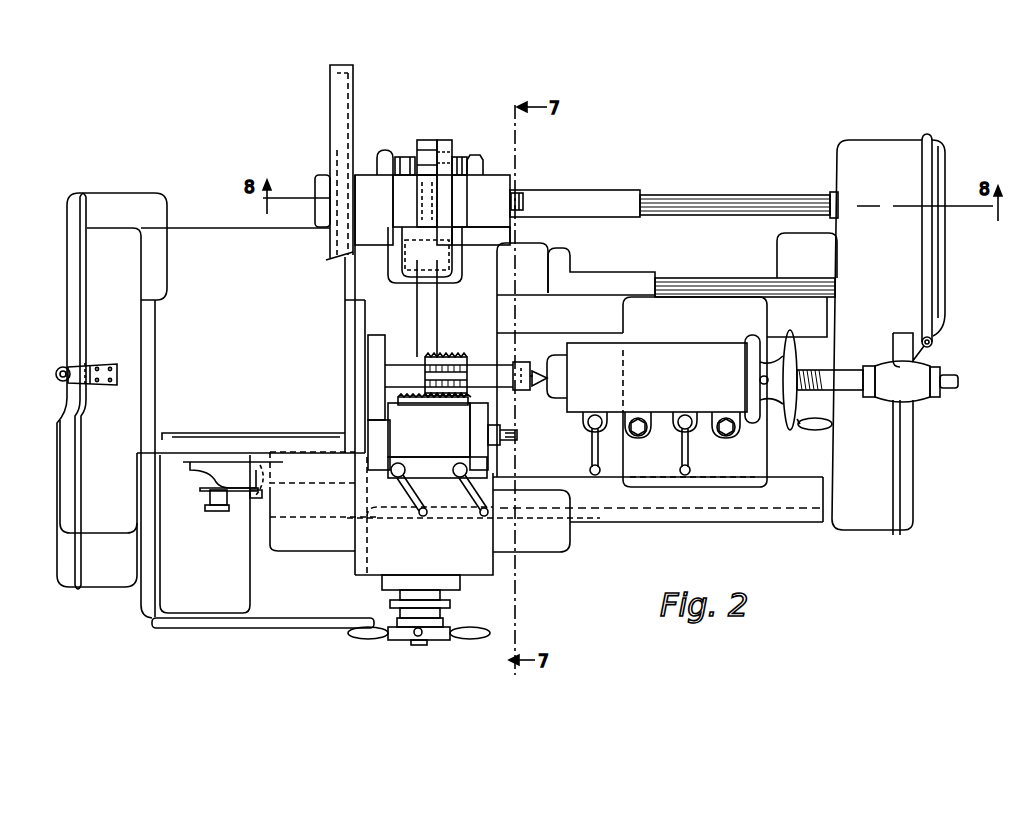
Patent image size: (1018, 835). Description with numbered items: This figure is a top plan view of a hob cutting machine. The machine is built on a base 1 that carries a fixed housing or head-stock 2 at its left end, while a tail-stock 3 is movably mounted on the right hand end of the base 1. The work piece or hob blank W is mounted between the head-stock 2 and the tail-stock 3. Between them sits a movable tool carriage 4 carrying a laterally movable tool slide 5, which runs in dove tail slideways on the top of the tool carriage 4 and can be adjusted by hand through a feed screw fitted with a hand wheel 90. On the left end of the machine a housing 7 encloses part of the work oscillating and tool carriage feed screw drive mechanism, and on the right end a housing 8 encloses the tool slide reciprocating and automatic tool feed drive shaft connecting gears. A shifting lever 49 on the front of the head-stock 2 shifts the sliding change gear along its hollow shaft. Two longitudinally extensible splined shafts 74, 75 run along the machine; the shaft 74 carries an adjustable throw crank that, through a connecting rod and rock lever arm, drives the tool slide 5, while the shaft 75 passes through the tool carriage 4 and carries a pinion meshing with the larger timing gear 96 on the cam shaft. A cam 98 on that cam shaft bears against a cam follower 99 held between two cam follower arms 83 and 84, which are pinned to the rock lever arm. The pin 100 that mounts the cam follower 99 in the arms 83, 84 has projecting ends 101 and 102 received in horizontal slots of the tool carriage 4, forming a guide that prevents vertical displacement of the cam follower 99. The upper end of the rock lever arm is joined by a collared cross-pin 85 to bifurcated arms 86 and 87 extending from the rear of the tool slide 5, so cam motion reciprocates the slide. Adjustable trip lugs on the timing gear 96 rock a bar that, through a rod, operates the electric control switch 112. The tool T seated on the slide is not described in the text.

The base 1 is at (628, 520).
The head-stock 2 is at (173, 378).
The tail-stock 3 is at (665, 405).
The tool carriage 4 is at (541, 540).
The tool slide 5 is at (465, 428).
The housing 7 is at (90, 442).
The housing 8 is at (888, 334).
The shifting lever 49 is at (236, 495).
The shaft 74 is at (718, 280).
The shaft 75 is at (740, 194).
The cam follower arm 83 is at (452, 198).
The cam follower arm 84 is at (398, 213).
The collared cross-pin 85 is at (430, 257).
The bifurcated arm 86 is at (443, 236).
The bifurcated arm 87 is at (413, 262).
The hand wheel 90 is at (442, 622).
The timing gear 96 is at (335, 157).
The cam 98 is at (427, 197).
The cam follower 99 is at (425, 150).
The pin 100 is at (443, 155).
The projecting end 101 is at (477, 158).
The projecting end 102 is at (387, 150).
The electric control switch 112 is at (333, 104).
The hob blank W is at (452, 353).
The tool T is at (432, 398).